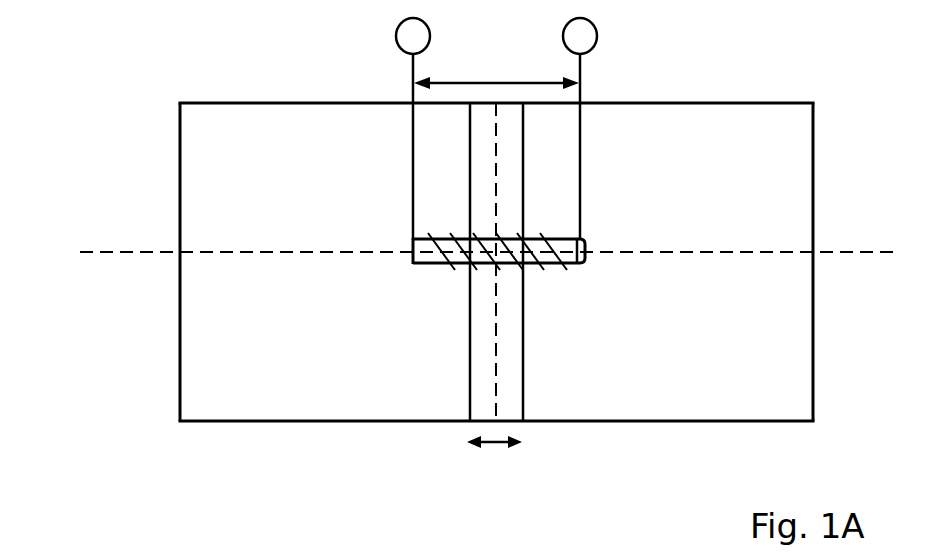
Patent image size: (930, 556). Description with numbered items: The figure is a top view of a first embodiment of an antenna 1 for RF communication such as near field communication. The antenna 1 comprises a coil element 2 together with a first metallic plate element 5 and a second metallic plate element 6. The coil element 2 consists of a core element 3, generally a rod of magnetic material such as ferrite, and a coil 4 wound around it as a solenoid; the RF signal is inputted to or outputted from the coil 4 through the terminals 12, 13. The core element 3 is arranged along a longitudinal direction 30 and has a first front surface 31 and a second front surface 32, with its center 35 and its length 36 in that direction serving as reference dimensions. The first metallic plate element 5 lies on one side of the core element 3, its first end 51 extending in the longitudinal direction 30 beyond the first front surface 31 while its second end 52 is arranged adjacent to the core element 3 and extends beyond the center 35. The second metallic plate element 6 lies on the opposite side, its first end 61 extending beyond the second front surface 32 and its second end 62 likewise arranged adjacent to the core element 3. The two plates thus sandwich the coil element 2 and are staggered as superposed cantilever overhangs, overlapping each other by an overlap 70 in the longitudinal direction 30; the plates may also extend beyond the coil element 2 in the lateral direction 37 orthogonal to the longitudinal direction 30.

The antenna 1 is at (100, 52).
The coil element 2 is at (602, 233).
The core element 3 is at (575, 266).
The coil 4 is at (453, 268).
The first metallic plate element 5 is at (257, 408).
The second metallic plate element 6 is at (716, 412).
The terminal 12 is at (397, 29).
The terminal 13 is at (597, 30).
The longitudinal direction 30 is at (862, 255).
The first front surface 31 is at (412, 259).
The second front surface 32 is at (588, 262).
The center of the core element 35 is at (500, 260).
The length of the core element 36 is at (497, 80).
The lateral direction 37 is at (497, 143).
The first end of first metallic plate element 51 is at (523, 382).
The second end of first metallic plate element 52 is at (172, 358).
The first end of second metallic plate element 61 is at (470, 382).
The second end of second metallic plate element 62 is at (814, 385).
The overlap 70 is at (494, 447).